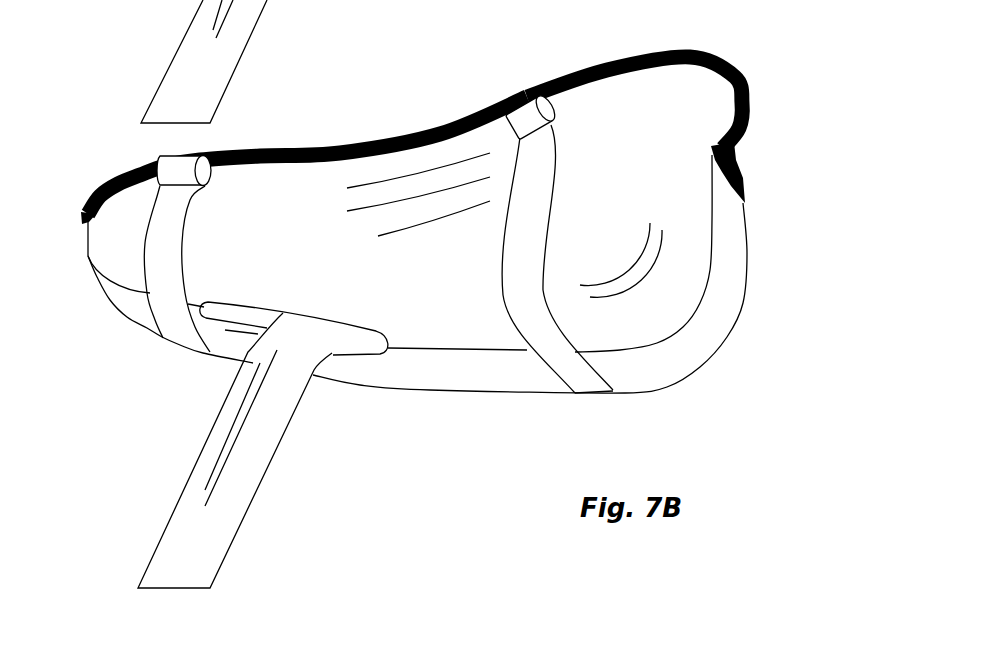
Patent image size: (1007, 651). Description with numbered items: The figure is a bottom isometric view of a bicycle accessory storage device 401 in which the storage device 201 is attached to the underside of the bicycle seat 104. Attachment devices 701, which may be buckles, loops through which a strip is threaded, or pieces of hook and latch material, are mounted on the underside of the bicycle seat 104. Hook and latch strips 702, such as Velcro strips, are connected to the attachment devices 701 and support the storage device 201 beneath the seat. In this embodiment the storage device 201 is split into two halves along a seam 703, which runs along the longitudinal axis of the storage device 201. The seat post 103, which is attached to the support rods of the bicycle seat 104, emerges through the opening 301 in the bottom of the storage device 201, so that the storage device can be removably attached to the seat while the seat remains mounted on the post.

The bicycle seat 104 is at (123, 165).
The accessory storage device 401 is at (583, 62).
The attachment devices 701 is at (525, 115).
The hook and latch strips 702 is at (167, 313).
The seam 703 is at (443, 352).
The opening 301 is at (207, 353).
The storage device 201 is at (530, 372).
The seat post 103 is at (185, 527).